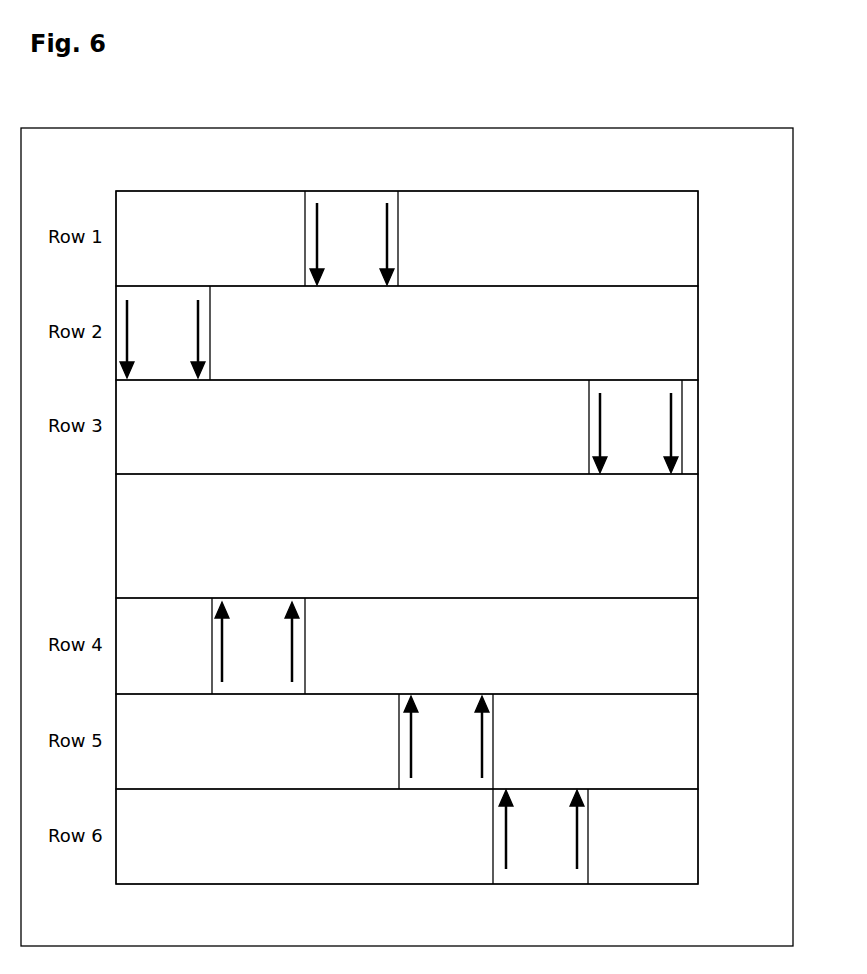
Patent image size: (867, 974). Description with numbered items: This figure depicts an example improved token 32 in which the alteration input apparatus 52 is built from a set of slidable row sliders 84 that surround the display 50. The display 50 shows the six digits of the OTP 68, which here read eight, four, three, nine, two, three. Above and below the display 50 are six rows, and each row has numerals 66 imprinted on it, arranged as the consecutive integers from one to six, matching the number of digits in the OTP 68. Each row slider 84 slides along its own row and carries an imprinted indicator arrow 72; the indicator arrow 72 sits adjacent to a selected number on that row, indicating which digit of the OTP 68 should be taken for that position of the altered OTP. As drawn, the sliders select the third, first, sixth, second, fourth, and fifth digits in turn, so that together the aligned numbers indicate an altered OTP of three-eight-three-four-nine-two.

The improved token 32 is at (408, 128).
The alteration input apparatus 52 is at (698, 191).
The numerals 66 is at (144, 199).
The OTP 68 is at (120, 529).
The indicator arrow 72 is at (577, 869).
The row sliders 84 is at (354, 223).
The display 50 is at (423, 538).